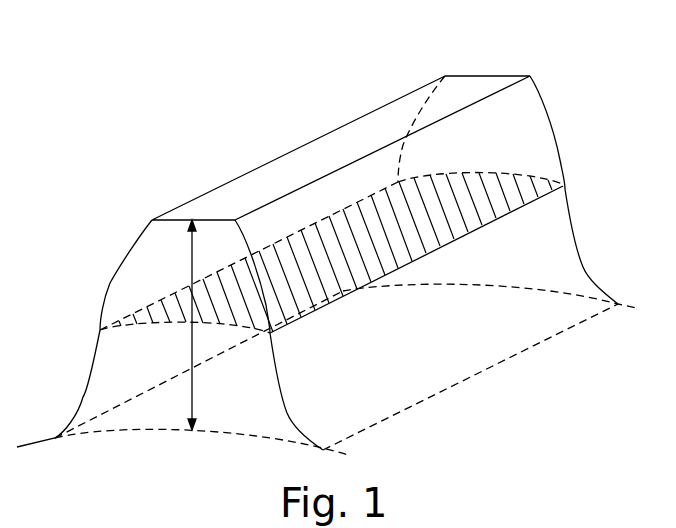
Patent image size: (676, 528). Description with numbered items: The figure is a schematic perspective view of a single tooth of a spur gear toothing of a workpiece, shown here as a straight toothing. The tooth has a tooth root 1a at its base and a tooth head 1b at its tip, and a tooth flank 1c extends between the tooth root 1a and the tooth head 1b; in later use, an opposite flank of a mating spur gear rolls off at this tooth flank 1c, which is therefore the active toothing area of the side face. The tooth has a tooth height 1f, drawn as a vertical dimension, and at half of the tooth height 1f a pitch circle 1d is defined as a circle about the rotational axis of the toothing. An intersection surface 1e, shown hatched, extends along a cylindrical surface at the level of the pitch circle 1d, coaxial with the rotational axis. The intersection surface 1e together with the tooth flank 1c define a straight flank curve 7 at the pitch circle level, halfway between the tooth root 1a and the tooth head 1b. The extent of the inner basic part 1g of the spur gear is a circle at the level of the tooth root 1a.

The tooth root 1a is at (580, 313).
The tooth head 1b is at (473, 87).
The tooth flank 1c is at (528, 174).
The pitch circle 1d is at (233, 323).
The intersection surface 1e is at (540, 191).
The tooth height 1f is at (185, 300).
The extent of the inner basic part 1g is at (57, 440).
The flank curve 7 is at (380, 272).